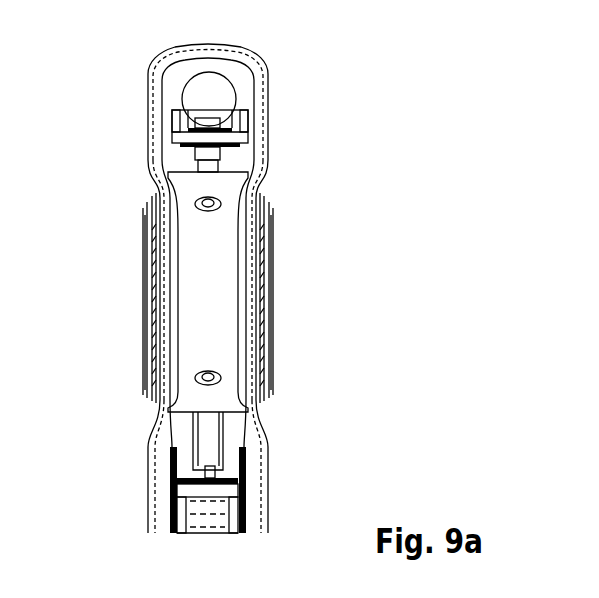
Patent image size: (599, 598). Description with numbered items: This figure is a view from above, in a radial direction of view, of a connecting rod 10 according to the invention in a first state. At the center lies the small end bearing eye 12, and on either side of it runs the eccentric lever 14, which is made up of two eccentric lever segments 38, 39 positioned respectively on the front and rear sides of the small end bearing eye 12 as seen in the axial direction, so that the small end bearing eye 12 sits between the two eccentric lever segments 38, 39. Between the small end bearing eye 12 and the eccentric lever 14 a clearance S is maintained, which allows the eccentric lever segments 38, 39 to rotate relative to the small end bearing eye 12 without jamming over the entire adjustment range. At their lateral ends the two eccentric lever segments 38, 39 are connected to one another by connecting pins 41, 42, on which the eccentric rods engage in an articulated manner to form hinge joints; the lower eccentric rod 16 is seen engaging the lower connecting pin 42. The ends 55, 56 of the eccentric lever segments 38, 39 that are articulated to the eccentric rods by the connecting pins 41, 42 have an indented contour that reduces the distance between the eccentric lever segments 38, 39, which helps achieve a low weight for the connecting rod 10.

The connecting rod 10 is at (300, 52).
The end of eccentric lever segment 55 is at (285, 100).
The connecting pin 41 is at (215, 124).
The small end bearing eye 12 is at (222, 278).
The eccentric lever 14 is at (256, 316).
The eccentric lever segment 38 is at (157, 316).
The eccentric lever segment 39 is at (312, 298).
The clearance S is at (272, 229).
The eccentric rod 16 is at (215, 428).
The end of eccentric lever segment 56 is at (285, 497).
The connecting pin 42 is at (214, 510).